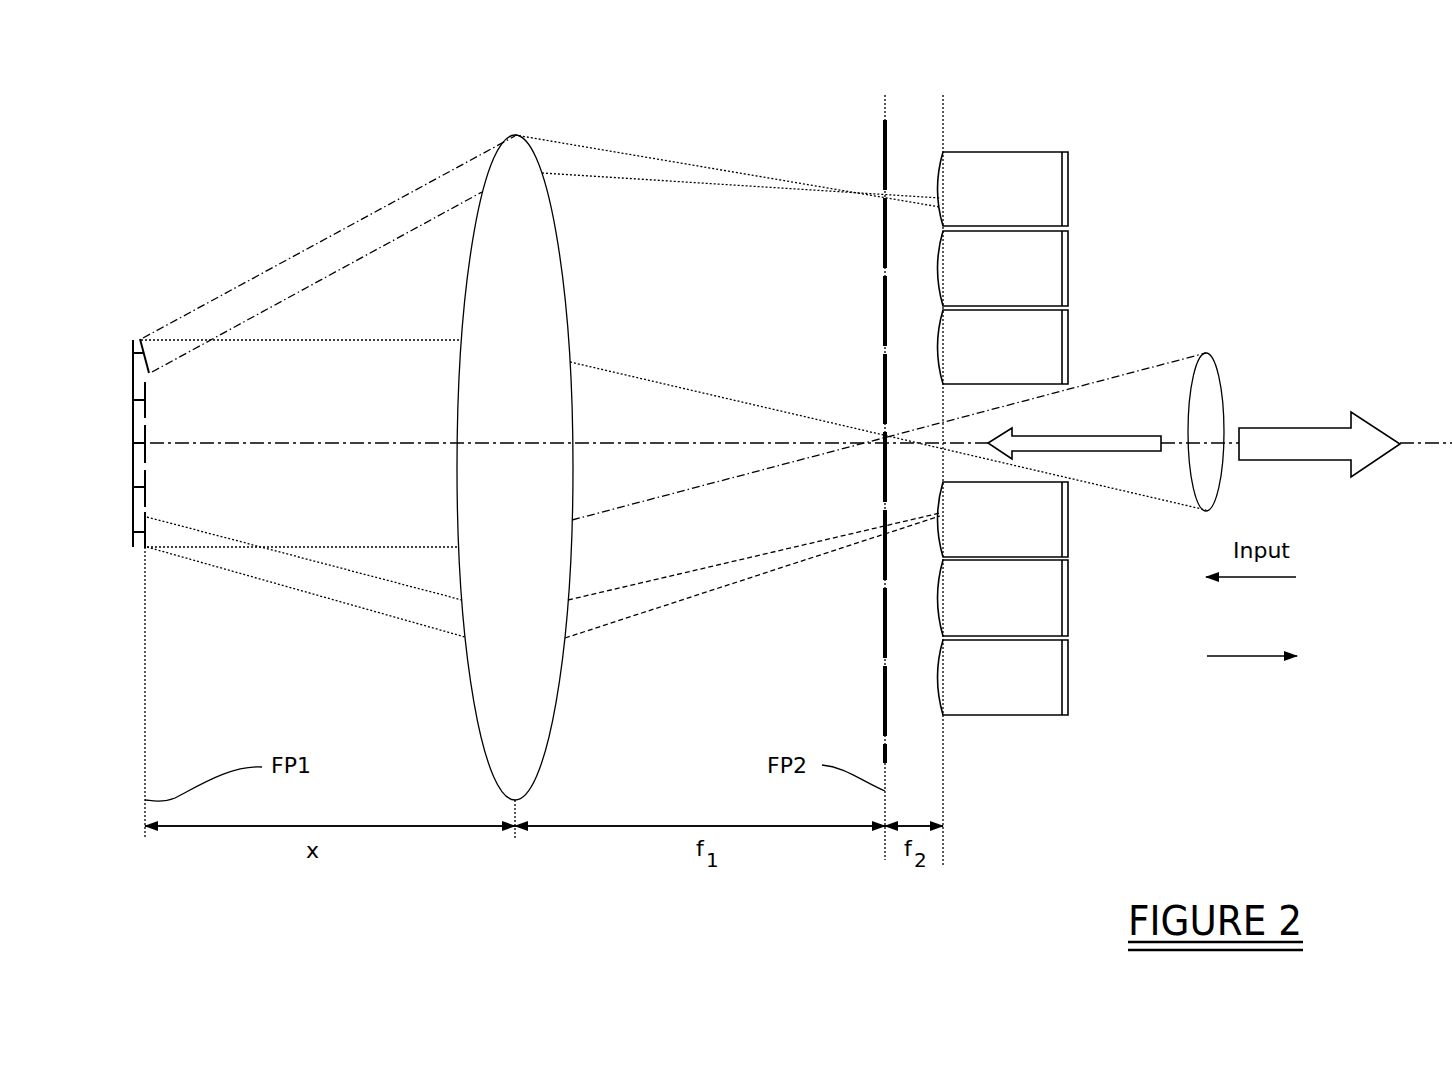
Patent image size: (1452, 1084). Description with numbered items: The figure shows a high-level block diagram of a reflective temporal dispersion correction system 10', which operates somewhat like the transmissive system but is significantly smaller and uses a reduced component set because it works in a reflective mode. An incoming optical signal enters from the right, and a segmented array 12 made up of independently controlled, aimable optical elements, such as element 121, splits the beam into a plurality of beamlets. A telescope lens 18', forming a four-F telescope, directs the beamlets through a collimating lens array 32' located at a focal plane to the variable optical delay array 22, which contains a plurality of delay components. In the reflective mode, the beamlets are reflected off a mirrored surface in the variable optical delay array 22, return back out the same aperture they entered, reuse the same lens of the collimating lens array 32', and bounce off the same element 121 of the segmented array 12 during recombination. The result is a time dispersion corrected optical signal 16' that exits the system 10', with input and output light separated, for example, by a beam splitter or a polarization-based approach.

The system 10' is at (801, 312).
The segmented array 12 is at (133, 350).
The optical element 121 is at (152, 368).
The telescope lens 18' is at (515, 444).
The collimating lens array 32' is at (826, 477).
The variable optical delay array 22 is at (1038, 140).
The time dispersion corrected optical signal 16' is at (1194, 427).